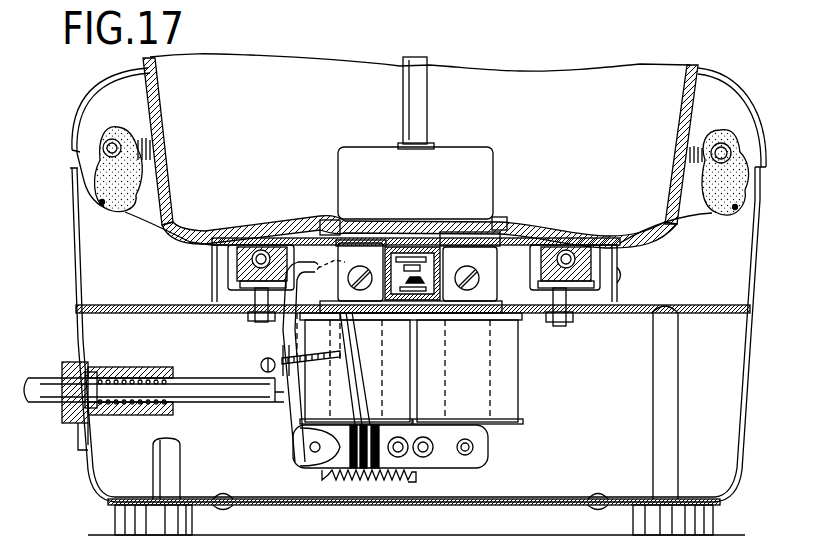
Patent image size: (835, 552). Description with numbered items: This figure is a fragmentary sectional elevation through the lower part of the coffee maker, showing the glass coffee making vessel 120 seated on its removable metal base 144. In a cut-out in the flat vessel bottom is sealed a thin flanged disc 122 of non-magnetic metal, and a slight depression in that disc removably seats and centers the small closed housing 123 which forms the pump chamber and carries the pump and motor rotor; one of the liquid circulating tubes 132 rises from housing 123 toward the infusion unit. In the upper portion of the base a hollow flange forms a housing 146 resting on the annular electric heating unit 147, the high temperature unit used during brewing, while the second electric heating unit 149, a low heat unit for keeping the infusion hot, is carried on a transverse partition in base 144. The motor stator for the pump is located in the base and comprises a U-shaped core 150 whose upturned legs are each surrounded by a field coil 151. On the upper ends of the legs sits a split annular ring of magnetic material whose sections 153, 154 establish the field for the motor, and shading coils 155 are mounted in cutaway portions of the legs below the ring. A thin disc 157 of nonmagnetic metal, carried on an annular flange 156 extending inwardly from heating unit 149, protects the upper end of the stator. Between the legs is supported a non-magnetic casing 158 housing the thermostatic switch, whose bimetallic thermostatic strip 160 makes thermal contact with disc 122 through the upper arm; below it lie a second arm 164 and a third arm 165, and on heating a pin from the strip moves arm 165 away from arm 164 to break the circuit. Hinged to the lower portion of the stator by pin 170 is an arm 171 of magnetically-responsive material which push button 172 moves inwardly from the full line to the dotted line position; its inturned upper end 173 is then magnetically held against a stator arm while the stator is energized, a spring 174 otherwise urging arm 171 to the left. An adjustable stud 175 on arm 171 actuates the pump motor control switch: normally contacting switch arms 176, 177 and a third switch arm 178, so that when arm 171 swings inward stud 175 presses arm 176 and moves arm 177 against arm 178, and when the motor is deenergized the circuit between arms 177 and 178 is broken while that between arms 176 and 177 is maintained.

The coffee making vessel 120 is at (702, 65).
The flanged metal disc 122 is at (455, 240).
The closed housing 123 is at (487, 163).
The liquid circulating tube 132 is at (417, 120).
The base 144 is at (746, 402).
The housing 146 is at (738, 128).
The annular electric heating unit 147 is at (698, 150).
The second electric heating unit 149 is at (255, 223).
The U-shaped core 150 is at (486, 430).
The field coil 151 is at (503, 382).
The split annular ring section 153 is at (384, 240).
The split annular ring section 154 is at (433, 240).
The shading coil 155 is at (497, 253).
The annular flange 156 is at (290, 223).
The thin disc 157 is at (500, 235).
The non-magnetic casing 158 is at (428, 285).
The bimetallic thermostatic strip 160 is at (405, 245).
The second arm 164 is at (400, 272).
The third arm 165 is at (415, 292).
The pin 170 is at (293, 457).
The arm 171 is at (288, 400).
The push button 172 is at (38, 387).
The inturned upper end 173 is at (297, 278).
The spring 174 is at (357, 476).
The adjustable stud 175 is at (300, 344).
The switch arm 176 is at (357, 394).
The switch arm 177 is at (358, 378).
The third switch arm 178 is at (368, 344).